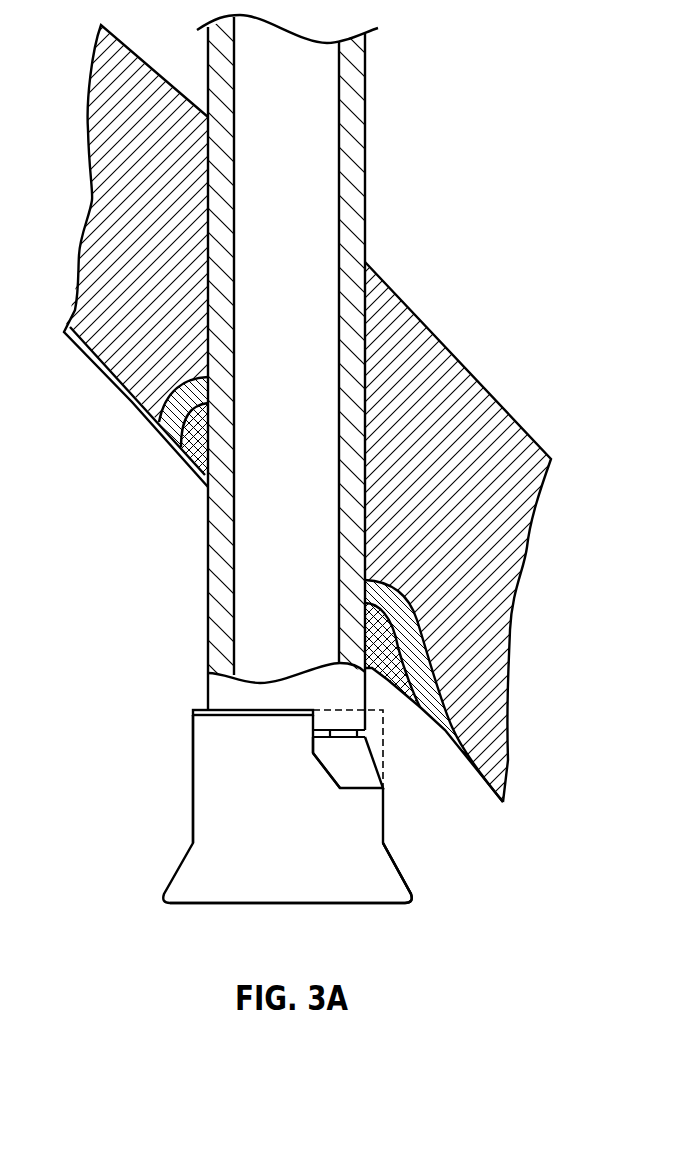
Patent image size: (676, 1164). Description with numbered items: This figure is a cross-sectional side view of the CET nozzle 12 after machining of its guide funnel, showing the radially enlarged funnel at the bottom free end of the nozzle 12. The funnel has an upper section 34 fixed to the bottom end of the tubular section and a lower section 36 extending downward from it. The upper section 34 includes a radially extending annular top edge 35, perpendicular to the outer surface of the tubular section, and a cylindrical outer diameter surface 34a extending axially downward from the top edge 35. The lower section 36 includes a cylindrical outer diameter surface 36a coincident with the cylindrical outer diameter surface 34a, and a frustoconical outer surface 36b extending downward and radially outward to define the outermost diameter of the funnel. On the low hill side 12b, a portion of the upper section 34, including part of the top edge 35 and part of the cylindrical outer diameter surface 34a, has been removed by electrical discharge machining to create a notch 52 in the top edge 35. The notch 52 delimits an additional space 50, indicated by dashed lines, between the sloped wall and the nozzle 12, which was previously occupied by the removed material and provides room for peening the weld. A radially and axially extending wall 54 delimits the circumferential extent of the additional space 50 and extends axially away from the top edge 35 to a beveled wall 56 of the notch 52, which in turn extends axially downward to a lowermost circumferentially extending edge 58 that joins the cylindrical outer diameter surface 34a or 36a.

The nozzle 12 is at (434, 909).
The low hill side 12b is at (485, 828).
The upper section 34 is at (60, 712).
The cylindrical outer diameter surface 34a is at (193, 752).
The annular top edge 35 is at (207, 707).
The lower section 36 is at (60, 792).
The cylindrical outer diameter surface 36a is at (193, 810).
The frustoconical outer surface 36b is at (400, 875).
The additional space 50 is at (392, 758).
The notch 52 is at (338, 695).
The radially and axially extending wall 54 is at (312, 740).
The beveled wall 56 is at (330, 773).
The lowermost circumferentially extending edge 58 is at (363, 790).